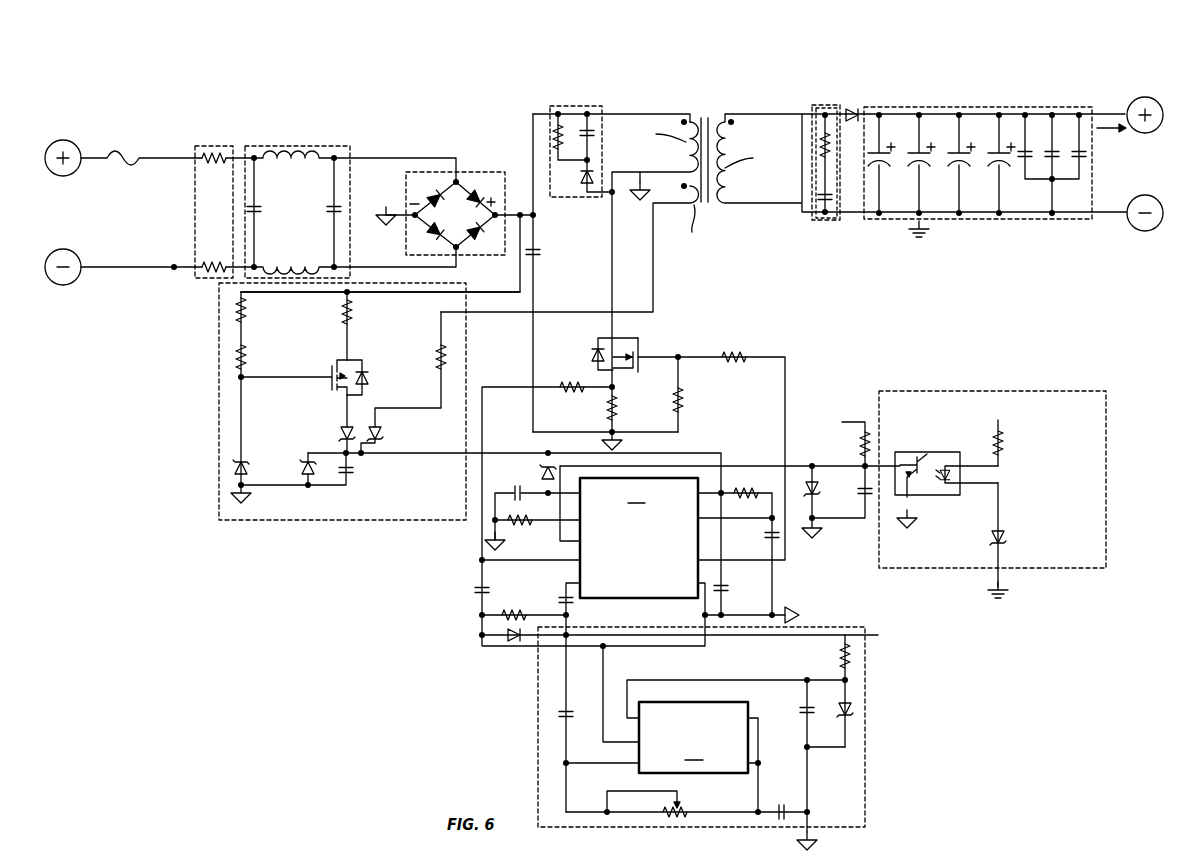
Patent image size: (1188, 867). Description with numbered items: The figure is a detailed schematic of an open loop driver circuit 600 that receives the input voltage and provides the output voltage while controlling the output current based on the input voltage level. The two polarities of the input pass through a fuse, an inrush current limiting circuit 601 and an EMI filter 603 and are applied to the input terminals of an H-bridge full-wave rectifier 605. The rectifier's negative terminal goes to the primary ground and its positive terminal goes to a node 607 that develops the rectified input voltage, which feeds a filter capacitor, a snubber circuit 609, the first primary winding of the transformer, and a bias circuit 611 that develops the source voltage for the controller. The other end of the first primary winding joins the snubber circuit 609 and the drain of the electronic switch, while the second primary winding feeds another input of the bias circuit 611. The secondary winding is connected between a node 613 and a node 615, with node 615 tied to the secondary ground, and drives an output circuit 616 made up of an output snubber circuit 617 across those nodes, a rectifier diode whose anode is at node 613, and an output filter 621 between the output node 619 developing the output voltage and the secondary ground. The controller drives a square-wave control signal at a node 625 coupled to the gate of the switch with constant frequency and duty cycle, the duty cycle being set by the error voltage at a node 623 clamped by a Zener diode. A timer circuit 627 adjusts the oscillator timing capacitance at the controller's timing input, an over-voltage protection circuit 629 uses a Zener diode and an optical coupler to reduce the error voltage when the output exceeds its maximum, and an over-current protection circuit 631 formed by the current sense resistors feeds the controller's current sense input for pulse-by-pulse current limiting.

The open loop driver circuit 600 is at (318, 643).
The inrush current limiting circuit 601 is at (215, 146).
The EMI filter 603 is at (291, 146).
The H-bridge full-wave rectifier 605 is at (456, 172).
The node 607 is at (536, 216).
The snubber circuit 609 is at (550, 114).
The bias circuit 611 is at (330, 520).
The node 613 is at (828, 107).
The node 615 is at (960, 219).
The output circuit 616 is at (792, 230).
The output snubber circuit 617 is at (828, 220).
The output node 619 is at (1078, 113).
The output filter 621 is at (960, 107).
The node 623 is at (812, 464).
The node 625 is at (678, 357).
The timer circuit 627 is at (868, 681).
The over-voltage protection (OVP) circuit 629 is at (985, 390).
The over-current protection (OCP) circuit 631 is at (596, 374).